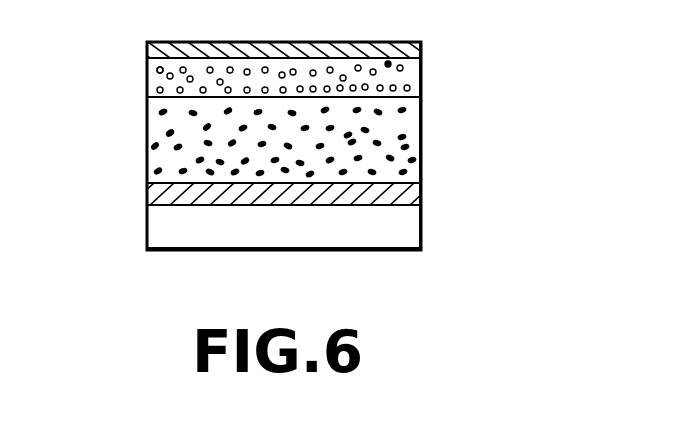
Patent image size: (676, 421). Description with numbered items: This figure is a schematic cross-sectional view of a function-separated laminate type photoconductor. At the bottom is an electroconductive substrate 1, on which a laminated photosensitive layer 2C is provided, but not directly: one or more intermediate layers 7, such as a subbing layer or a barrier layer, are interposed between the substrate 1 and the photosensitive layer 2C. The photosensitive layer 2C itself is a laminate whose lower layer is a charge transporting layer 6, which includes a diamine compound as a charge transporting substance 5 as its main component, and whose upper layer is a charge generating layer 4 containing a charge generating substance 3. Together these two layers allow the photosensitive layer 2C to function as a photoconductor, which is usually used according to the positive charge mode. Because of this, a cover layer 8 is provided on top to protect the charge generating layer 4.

The electroconductive substrate 1 is at (404, 232).
The laminated photosensitive layer 2C is at (327, 122).
The charge generating substance 3 is at (158, 71).
The charge generating layer 4 is at (408, 75).
The charge transporting substance 5 is at (160, 143).
The charge transporting layer 6 is at (398, 125).
The intermediate layer 7 is at (153, 191).
The cover layer 8 is at (410, 51).